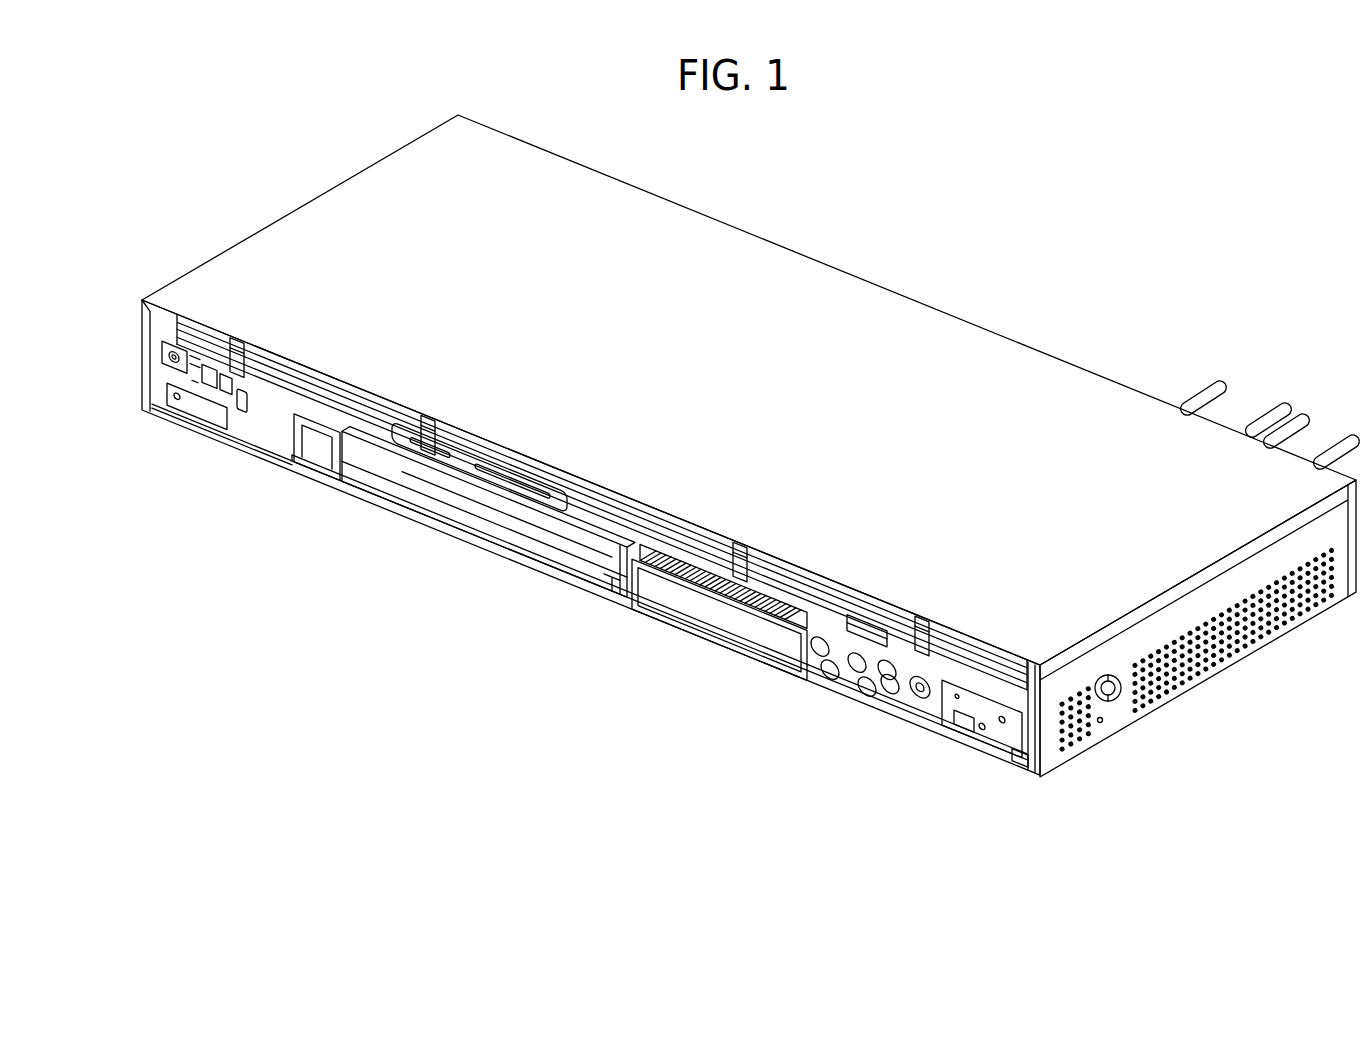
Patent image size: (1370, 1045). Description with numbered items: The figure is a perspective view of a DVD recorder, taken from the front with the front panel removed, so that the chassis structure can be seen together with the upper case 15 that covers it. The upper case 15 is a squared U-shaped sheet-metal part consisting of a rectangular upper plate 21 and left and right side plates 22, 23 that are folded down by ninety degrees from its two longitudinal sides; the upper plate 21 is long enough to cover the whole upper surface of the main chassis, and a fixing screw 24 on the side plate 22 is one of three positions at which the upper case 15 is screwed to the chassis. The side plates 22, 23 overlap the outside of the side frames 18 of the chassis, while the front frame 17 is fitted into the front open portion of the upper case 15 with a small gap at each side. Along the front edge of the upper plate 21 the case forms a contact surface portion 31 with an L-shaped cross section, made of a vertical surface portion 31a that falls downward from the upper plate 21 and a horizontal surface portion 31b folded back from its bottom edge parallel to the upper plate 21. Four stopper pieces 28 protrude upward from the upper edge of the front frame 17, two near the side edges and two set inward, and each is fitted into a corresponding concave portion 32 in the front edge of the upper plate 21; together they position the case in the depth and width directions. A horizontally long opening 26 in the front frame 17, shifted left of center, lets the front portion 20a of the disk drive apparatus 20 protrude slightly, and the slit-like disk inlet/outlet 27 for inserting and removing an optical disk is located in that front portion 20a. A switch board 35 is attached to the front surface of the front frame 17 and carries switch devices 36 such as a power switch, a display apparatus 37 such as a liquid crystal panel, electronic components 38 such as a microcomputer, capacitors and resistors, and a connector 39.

The upper case 15 is at (882, 266).
The front frame 17 is at (275, 455).
The side frame 18 is at (1025, 768).
The disk drive apparatus 20 is at (412, 516).
The front portion of the disk drive apparatus 20a is at (601, 580).
The upper plate 21 is at (1000, 352).
The side plate 22 is at (1248, 640).
The side plate 23 is at (140, 303).
The fixing screw 24 is at (1112, 703).
The horizontally long opening 26 is at (318, 470).
The disk inlet/outlet 27 is at (541, 550).
The stopper piece 28 is at (238, 342).
The contact surface portion 31 is at (602, 507).
The vertical surface portion 31a is at (612, 494).
The horizontal surface portion 31b is at (677, 446).
The concave portion 32 is at (255, 343).
The switch board 35 is at (958, 735).
The switch device 36 is at (907, 703).
The display apparatus 37 is at (701, 625).
The electronic component 38 is at (868, 698).
The connector 39 is at (866, 630).